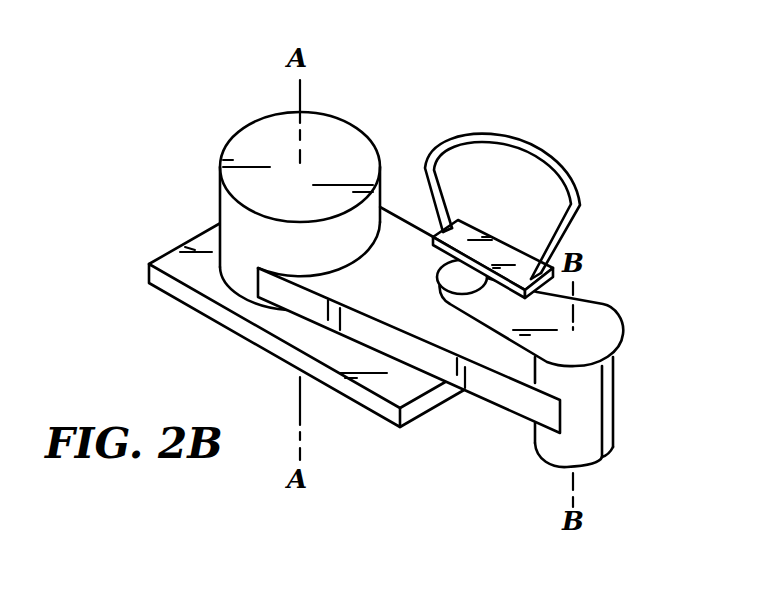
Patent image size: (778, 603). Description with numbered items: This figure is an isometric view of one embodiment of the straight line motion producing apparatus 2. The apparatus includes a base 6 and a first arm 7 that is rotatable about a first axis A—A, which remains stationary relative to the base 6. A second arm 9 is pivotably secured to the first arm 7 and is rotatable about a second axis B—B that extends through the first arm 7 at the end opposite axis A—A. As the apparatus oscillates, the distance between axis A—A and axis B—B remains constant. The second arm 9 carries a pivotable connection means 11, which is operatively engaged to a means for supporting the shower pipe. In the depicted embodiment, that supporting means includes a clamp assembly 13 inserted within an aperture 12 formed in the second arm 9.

The straight line motion producing apparatus 2 is at (347, 152).
The base 6 is at (202, 279).
The first arm 7 is at (487, 385).
The second arm 9 is at (598, 328).
The pivotable connection means 11 is at (468, 278).
The aperture 12 is at (440, 284).
The clamp assembly 13 is at (540, 160).